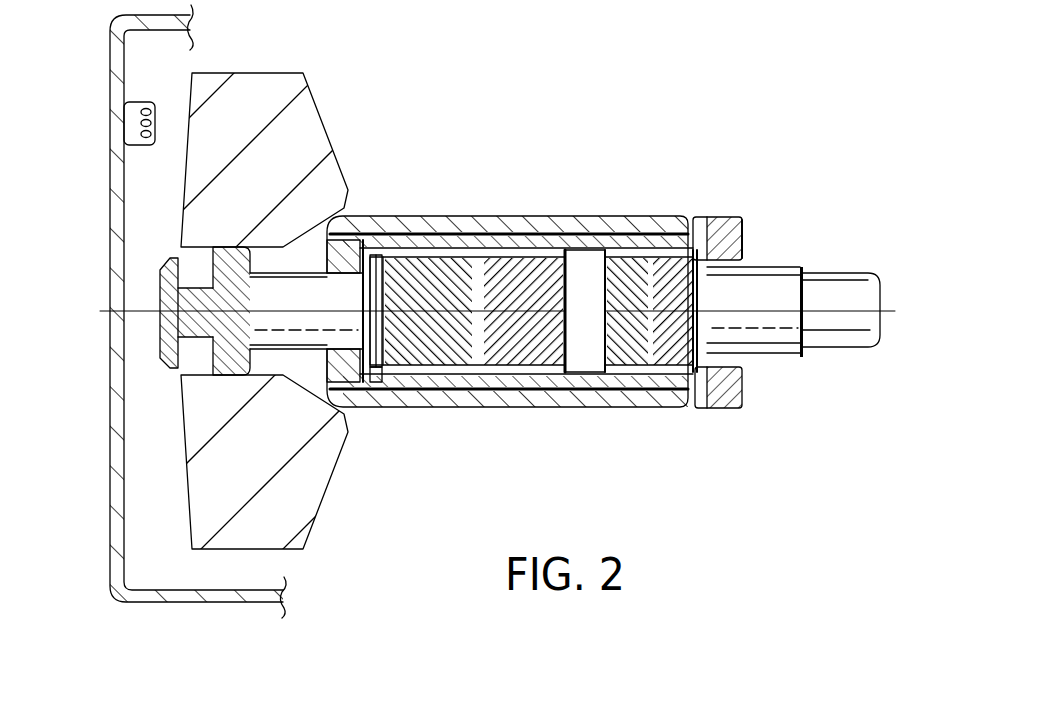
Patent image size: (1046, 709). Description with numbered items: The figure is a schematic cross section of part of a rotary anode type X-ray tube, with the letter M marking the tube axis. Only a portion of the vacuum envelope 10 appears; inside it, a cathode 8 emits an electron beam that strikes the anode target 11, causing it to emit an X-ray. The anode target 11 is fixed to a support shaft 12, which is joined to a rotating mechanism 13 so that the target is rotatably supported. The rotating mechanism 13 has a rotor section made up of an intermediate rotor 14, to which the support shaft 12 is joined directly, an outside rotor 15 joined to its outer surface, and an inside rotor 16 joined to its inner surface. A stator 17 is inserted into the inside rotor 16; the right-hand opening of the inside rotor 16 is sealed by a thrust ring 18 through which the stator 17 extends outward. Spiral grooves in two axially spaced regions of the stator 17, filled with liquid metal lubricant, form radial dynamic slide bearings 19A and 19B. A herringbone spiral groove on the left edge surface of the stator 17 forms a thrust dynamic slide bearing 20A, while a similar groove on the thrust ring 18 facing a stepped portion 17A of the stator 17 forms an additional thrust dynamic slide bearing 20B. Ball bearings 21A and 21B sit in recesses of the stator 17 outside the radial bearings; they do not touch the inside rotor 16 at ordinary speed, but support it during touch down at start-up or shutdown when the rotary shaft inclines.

The cathode 8 is at (131, 127).
The vacuum envelope 10 is at (110, 457).
The anode target 11 is at (288, 93).
The support shaft 12 is at (230, 246).
The rotating mechanism 13 is at (567, 287).
The intermediate rotor 14 is at (487, 231).
The outside rotor 15 is at (557, 235).
The inside rotor 16 is at (605, 249).
The stator 17 is at (592, 360).
The stepped portion 17A is at (722, 227).
The thrust ring 18 is at (742, 240).
The radial dynamic slide bearing 19A is at (452, 364).
The radial dynamic slide bearing 19B is at (640, 345).
The thrust dynamic slide bearing 20A is at (380, 263).
The additional thrust dynamic slide bearing 20B is at (742, 383).
The ball bearing 21A is at (388, 372).
The ball bearing 21B is at (713, 400).
The tube axis M is at (845, 313).